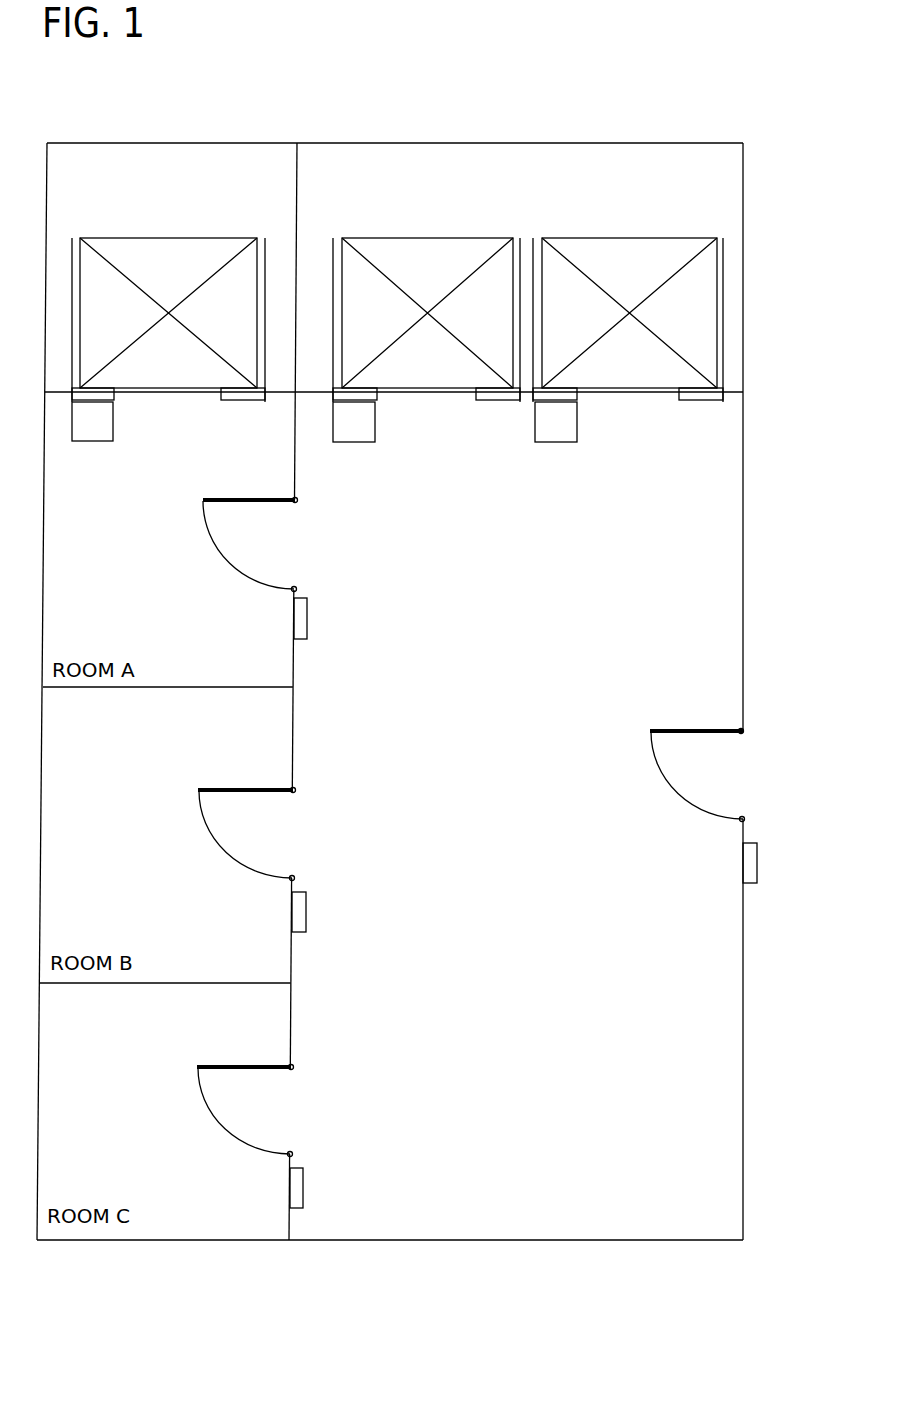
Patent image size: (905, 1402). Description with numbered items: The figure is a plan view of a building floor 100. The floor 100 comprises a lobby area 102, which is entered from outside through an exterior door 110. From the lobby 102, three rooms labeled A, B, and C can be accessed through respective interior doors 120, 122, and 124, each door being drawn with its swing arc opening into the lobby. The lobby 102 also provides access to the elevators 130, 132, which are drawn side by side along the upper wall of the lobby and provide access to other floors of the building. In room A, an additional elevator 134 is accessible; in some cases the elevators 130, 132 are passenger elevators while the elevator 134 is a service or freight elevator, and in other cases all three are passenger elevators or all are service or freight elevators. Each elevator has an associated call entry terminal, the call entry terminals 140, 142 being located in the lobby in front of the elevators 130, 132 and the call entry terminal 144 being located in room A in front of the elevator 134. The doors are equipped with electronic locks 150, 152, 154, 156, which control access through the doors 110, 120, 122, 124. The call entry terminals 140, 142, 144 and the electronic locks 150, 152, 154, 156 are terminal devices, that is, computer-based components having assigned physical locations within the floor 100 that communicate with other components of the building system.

The building floor 100 is at (642, 93).
The lobby area 102 is at (516, 691).
The exterior door 110 is at (698, 728).
The interior door 120 is at (252, 502).
The interior door 122 is at (253, 786).
The interior door 124 is at (253, 1063).
The elevator 130 is at (353, 237).
The elevator 132 is at (565, 237).
The elevator 134 is at (92, 237).
The call entry terminal 140 is at (350, 442).
The call entry terminal 142 is at (552, 442).
The call entry terminal 144 is at (89, 441).
The electronic lock 150 is at (307, 620).
The electronic lock 152 is at (306, 912).
The electronic lock 154 is at (303, 1188).
The electronic lock 156 is at (742, 863).